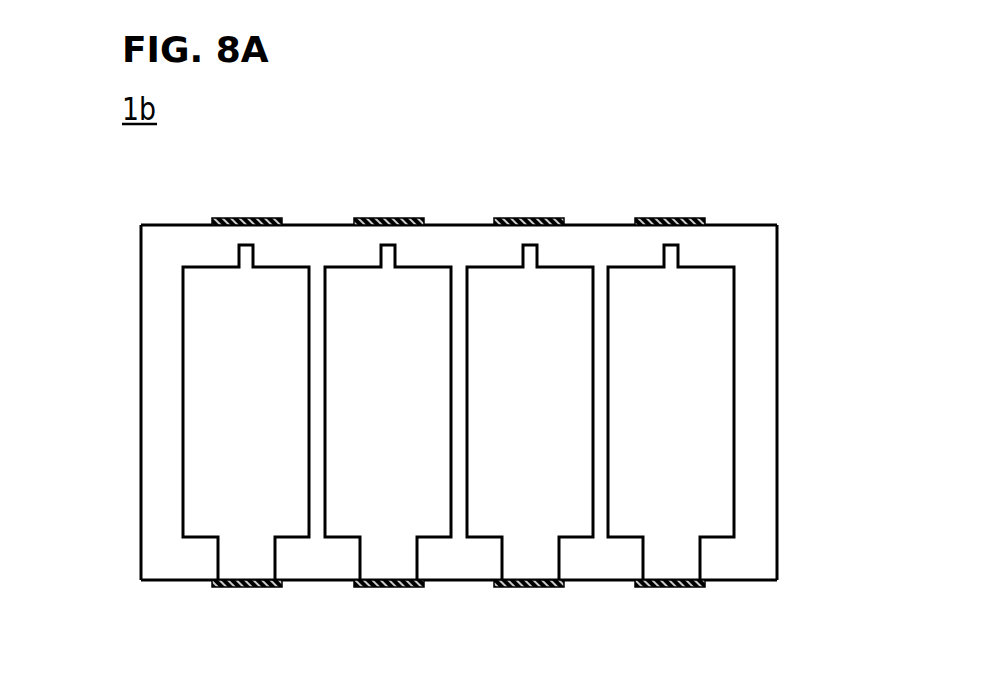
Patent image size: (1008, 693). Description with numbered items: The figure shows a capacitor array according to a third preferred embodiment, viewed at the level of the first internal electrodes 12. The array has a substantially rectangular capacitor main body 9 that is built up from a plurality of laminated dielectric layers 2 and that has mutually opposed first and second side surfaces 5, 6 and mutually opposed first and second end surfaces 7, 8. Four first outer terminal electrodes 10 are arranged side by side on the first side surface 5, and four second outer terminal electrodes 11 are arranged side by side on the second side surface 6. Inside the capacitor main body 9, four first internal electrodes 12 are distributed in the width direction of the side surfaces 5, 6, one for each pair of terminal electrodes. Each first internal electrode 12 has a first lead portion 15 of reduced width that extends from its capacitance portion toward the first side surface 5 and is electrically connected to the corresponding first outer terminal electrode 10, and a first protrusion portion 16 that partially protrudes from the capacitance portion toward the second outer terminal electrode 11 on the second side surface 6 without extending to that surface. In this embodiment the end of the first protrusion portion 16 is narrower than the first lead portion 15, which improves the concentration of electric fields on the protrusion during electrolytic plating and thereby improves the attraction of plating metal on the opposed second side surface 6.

The dielectric layer 2 is at (463, 401).
The first side surface 5 is at (445, 588).
The second side surface 6 is at (457, 225).
The first end surface 7 is at (141, 294).
The second end surface 8 is at (777, 423).
The capacitor main body 9 is at (457, 388).
The first outer terminal electrode 10 is at (383, 446).
The second outer terminal electrode 11 is at (267, 218).
The first internal electrode 12 is at (181, 425).
The first lead portion 15 is at (240, 559).
The first protrusion portion 16 is at (247, 260).